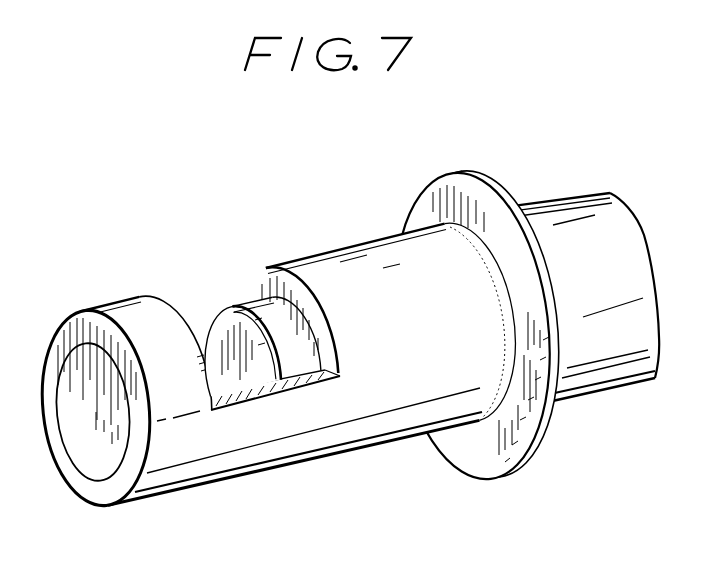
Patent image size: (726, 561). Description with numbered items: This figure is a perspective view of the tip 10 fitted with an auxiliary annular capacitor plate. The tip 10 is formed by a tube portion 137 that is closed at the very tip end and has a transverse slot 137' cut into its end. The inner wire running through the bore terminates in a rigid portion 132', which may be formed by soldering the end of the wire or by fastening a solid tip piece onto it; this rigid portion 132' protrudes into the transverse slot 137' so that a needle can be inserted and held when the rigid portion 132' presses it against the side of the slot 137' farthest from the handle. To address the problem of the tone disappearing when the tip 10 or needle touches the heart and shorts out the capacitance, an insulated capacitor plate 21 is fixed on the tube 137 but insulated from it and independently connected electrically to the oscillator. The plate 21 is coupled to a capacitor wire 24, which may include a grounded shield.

The tip 10 is at (561, 532).
The insulated capacitor plate 21 is at (447, 174).
The capacitor wire 24 is at (507, 187).
The tube portion 137 is at (591, 324).
The transverse slot 137' is at (121, 371).
The rigid portion 132' is at (219, 305).